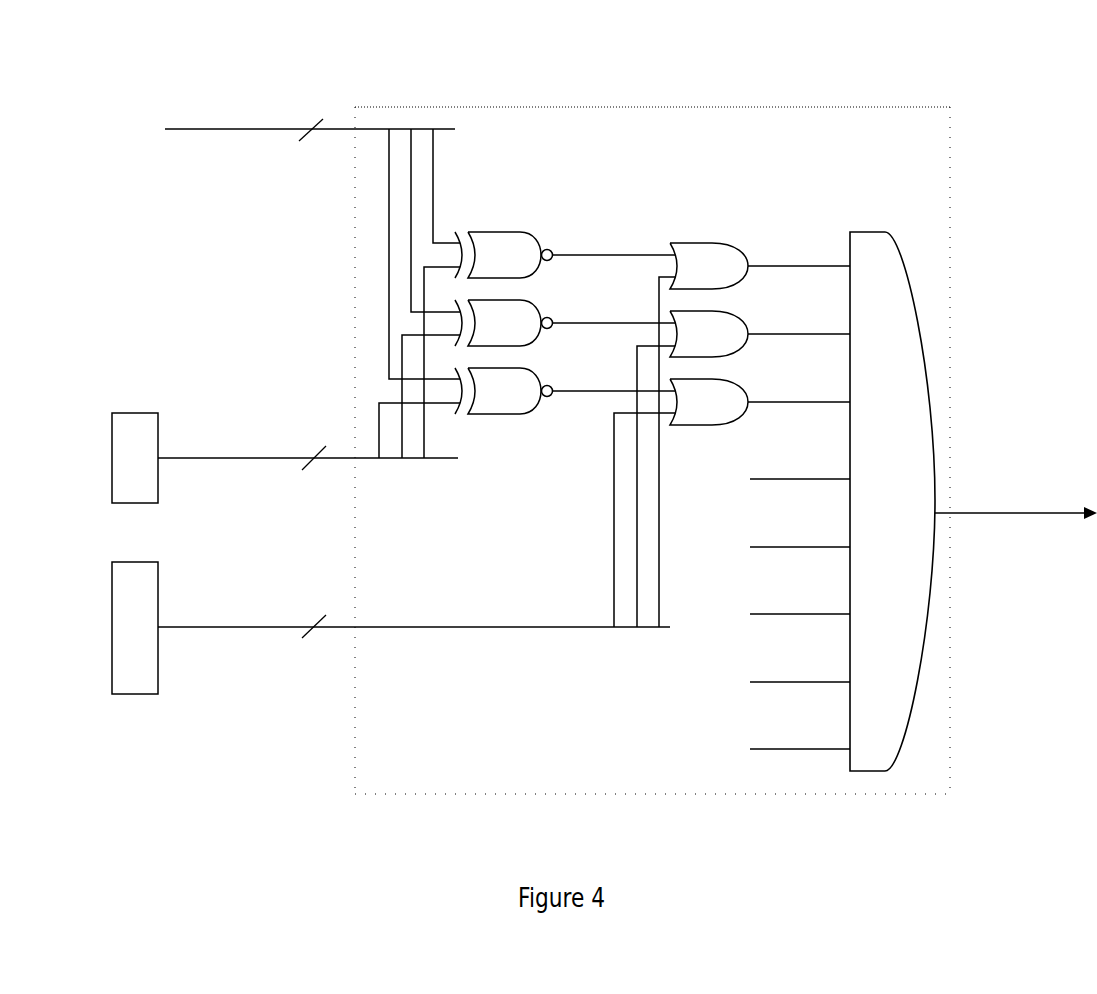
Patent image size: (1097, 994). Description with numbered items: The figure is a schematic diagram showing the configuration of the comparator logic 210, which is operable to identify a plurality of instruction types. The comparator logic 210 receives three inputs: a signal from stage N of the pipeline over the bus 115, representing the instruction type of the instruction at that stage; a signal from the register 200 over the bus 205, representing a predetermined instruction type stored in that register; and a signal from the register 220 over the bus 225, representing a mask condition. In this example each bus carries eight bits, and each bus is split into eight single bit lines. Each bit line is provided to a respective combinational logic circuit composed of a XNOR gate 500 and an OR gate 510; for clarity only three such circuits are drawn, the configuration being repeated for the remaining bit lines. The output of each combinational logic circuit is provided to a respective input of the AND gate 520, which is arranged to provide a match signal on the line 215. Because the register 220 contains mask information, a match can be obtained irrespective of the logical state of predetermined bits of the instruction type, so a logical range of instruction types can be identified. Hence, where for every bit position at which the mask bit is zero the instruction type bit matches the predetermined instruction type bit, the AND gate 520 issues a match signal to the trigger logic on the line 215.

The bus 115 is at (295, 130).
The register 200 is at (137, 503).
The bus 205 is at (252, 459).
The comparator logic 210 is at (745, 107).
The line 215 is at (1065, 514).
The register 220 is at (140, 694).
The bus 225 is at (248, 627).
The XNOR gate 500 is at (497, 232).
The OR gate 510 is at (697, 243).
The AND gate 520 is at (865, 232).